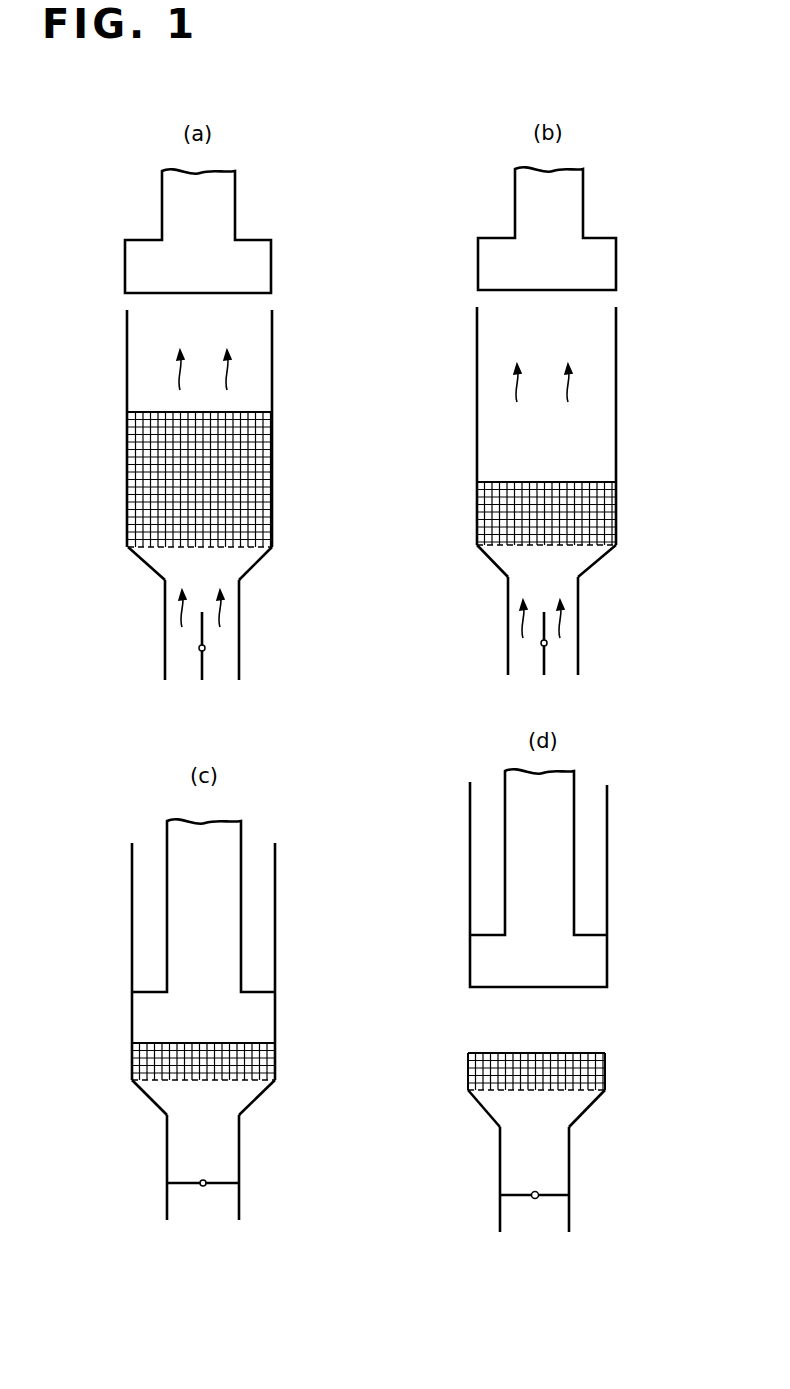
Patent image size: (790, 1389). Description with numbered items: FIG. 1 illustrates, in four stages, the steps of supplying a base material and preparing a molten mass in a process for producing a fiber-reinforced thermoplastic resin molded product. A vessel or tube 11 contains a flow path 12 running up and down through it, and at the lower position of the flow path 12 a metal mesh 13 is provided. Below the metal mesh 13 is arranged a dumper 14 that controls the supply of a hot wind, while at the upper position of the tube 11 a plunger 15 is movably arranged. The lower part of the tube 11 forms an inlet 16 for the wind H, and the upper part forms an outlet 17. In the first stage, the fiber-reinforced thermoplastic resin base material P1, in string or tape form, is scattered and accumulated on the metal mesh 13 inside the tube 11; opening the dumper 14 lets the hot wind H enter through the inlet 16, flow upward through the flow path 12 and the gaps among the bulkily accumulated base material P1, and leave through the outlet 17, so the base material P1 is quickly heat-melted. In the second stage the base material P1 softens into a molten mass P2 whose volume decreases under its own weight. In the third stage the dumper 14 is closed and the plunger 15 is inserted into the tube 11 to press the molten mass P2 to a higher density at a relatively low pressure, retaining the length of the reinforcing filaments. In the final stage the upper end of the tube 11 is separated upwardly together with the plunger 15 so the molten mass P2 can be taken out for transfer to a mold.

The tube 11 is at (272, 388).
The flow path 12 is at (146, 388).
The metal mesh 13 is at (240, 548).
The dumper 14 is at (202, 665).
The plunger 15 is at (235, 207).
The inlet 16 is at (215, 672).
The outlet 17 is at (247, 317).
The hot wind H is at (227, 372).
The fiber-reinforced thermoplastic resin base material P1 is at (252, 465).
The molten mass P2 is at (586, 515).